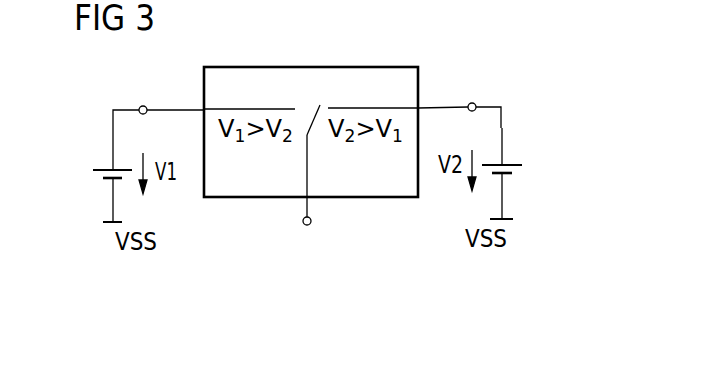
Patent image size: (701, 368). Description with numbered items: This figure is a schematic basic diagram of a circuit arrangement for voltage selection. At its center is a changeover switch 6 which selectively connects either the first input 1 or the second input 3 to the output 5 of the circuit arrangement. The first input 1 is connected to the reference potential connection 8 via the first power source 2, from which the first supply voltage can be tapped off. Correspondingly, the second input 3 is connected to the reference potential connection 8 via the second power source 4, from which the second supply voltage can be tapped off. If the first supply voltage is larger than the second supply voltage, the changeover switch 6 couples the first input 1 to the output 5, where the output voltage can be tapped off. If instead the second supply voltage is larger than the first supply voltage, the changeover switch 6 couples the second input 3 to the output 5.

The first input 1 is at (141, 105).
The first power source 2 is at (113, 130).
The second input 3 is at (473, 103).
The second power source 4 is at (501, 128).
The output 5 is at (310, 224).
The changeover switch 6 is at (307, 160).
The reference potential connection 8 is at (110, 224).